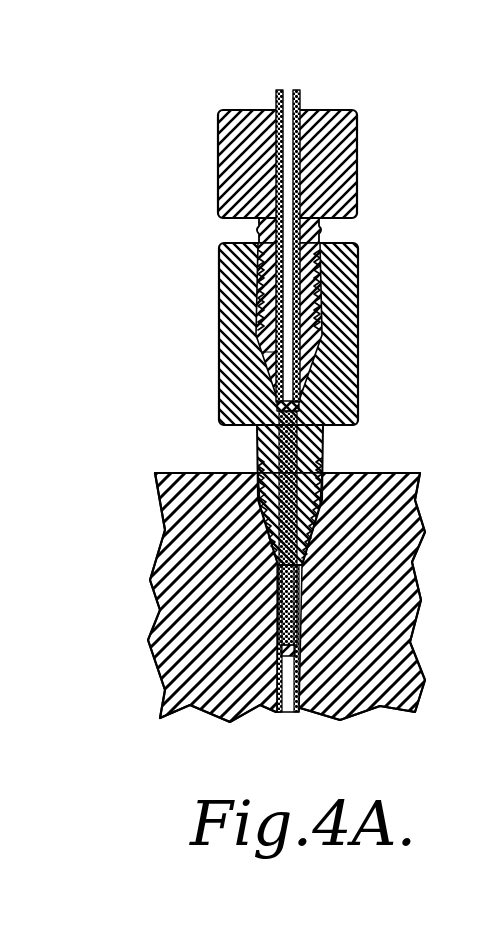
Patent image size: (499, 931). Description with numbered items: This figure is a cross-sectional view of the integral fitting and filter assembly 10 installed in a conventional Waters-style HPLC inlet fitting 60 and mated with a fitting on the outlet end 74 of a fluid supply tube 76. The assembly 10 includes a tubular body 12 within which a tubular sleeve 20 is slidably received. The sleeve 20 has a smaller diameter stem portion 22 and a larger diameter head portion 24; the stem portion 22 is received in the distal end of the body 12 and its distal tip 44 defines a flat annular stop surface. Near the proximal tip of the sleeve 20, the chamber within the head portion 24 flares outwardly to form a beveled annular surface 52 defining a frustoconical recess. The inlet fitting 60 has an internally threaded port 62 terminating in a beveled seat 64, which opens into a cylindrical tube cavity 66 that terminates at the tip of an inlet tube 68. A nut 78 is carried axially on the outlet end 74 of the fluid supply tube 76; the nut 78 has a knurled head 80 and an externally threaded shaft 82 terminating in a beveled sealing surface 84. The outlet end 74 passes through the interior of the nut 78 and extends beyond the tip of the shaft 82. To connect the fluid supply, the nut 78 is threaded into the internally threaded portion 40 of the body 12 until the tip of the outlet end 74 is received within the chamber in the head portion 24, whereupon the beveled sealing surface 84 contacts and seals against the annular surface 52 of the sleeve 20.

The integral fitting and filter assembly 10 is at (153, 313).
The tubular body 12 is at (358, 378).
The tubular sleeve 20 is at (352, 430).
The stem portion 22 is at (262, 468).
The head portion 24 is at (352, 412).
The internally threaded portion 40 is at (332, 258).
The distal tip 44 is at (300, 652).
The beveled annular surface 52 is at (262, 352).
The HPLC inlet fitting 60 is at (160, 585).
The internally threaded port 62 is at (322, 468).
The beveled seat 64 is at (304, 555).
The cylindrical tube cavity 66 is at (299, 622).
The inlet tube 68 is at (287, 712).
The outlet end 74 is at (264, 405).
The fluid supply tube 76 is at (300, 100).
The nut 78 is at (370, 165).
The knurled head 80 is at (340, 128).
The externally threaded shaft 82 is at (258, 232).
The beveled sealing surface 84 is at (355, 340).